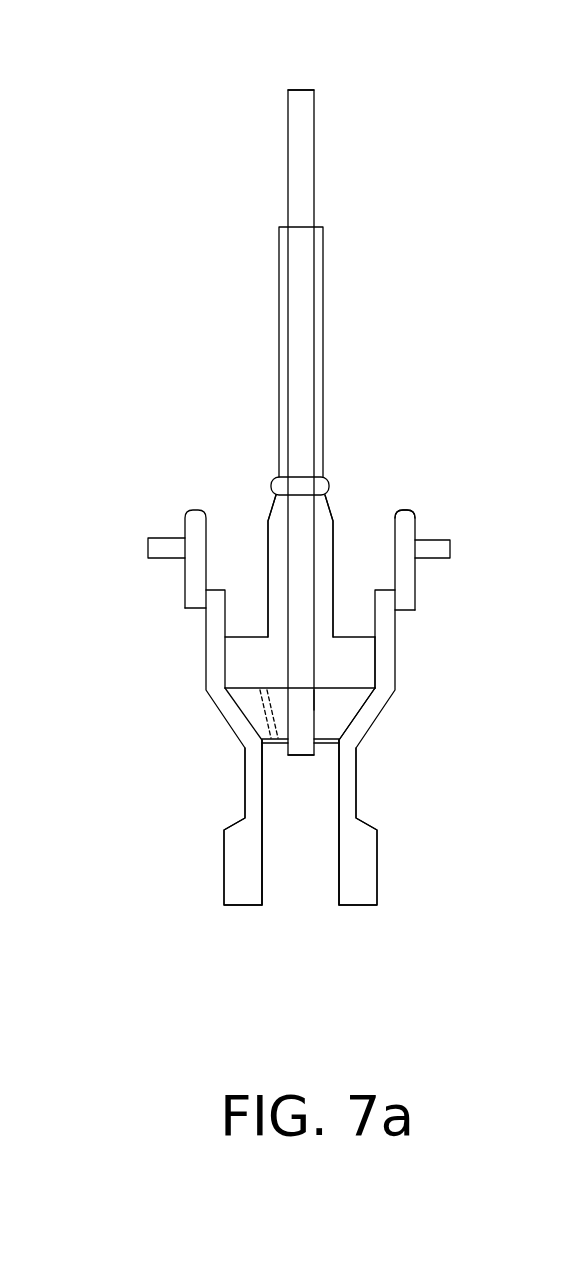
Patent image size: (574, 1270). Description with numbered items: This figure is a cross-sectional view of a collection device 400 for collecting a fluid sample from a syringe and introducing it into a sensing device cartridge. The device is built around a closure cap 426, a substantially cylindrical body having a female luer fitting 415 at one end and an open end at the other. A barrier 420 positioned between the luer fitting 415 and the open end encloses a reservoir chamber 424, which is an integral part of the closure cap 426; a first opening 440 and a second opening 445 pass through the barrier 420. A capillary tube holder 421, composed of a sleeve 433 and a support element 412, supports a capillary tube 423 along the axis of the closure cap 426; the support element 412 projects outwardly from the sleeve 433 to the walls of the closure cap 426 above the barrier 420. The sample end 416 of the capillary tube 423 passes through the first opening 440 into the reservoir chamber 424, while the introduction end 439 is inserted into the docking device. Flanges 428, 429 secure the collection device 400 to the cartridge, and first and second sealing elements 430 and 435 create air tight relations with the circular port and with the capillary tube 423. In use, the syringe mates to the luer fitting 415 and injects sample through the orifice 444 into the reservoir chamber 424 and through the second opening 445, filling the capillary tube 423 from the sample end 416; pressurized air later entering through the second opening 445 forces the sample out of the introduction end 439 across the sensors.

The collection device 400 is at (80, 241).
The introduction end 439 is at (302, 72).
The capillary tube 423 is at (327, 178).
The sleeve 433 is at (336, 288).
The second sealing element 435 is at (341, 478).
The capillary tube holder 421 is at (260, 358).
The first sealing element 430 is at (410, 502).
The flange 428 is at (138, 545).
The flange 429 is at (455, 547).
The reservoir chamber 424 is at (227, 570).
The support element 412 is at (250, 659).
The closure cap 426 is at (410, 625).
The second opening 445 is at (247, 716).
The first opening 440 is at (328, 702).
The barrier 420 is at (348, 731).
The sample end 416 is at (317, 757).
The female luer fitting 415 is at (238, 893).
The orifice 444 is at (297, 902).